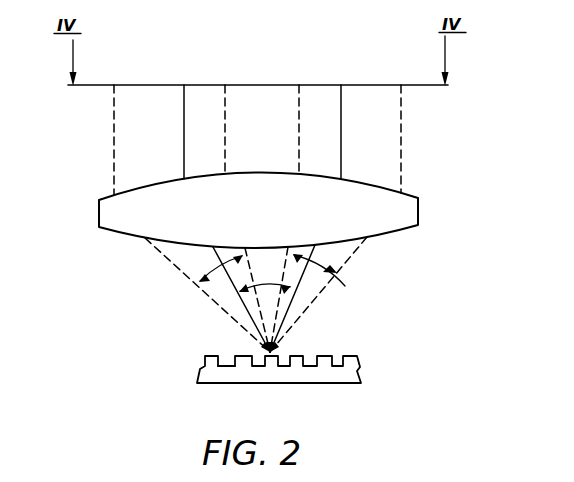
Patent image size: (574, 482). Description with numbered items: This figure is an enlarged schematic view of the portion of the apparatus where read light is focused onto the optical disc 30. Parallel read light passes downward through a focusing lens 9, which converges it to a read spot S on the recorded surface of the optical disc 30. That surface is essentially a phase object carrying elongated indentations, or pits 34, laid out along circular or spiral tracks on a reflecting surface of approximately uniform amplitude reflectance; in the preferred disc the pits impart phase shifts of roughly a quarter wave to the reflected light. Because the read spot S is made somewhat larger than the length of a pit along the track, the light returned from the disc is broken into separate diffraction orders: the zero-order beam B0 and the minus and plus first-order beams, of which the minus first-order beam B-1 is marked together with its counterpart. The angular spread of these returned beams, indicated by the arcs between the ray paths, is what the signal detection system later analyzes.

The lens 9 is at (420, 207).
The optical disc 30 is at (358, 371).
The pits 34 is at (225, 360).
The read light spot S is at (290, 347).
The minus first diffraction order beam B-1 is at (200, 281).
The zero diffraction order beam B0 is at (240, 291).